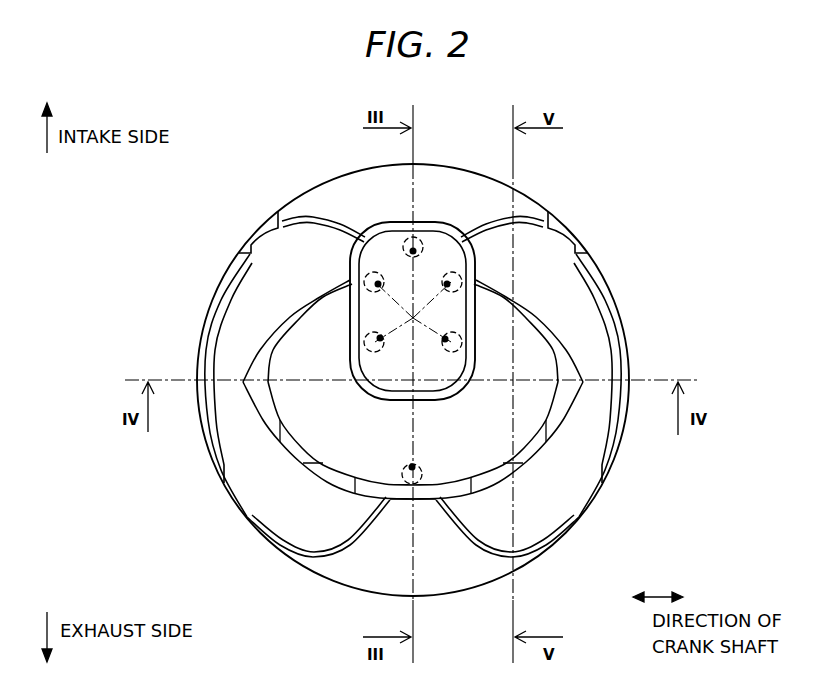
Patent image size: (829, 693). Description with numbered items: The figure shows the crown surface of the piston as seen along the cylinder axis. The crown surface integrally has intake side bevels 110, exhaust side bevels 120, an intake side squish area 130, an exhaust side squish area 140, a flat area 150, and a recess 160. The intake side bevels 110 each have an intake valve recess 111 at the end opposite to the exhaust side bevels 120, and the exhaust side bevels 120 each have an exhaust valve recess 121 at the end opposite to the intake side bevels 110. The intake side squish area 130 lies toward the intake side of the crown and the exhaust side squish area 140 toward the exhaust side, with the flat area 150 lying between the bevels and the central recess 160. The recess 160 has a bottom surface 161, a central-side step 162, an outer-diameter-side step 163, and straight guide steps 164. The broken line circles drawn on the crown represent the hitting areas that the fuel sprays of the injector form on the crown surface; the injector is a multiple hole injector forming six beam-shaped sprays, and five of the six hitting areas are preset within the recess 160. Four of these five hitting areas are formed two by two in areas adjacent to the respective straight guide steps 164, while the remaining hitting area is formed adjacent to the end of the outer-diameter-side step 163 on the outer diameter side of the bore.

The intake side bevel 110 is at (268, 294).
The intake valve recess 111 is at (297, 228).
The exhaust side bevel 120 is at (280, 490).
The exhaust valve recess 121 is at (310, 545).
The intake side squish area 130 is at (330, 204).
The exhaust side squish area 140 is at (352, 573).
The flat area 150 is at (483, 420).
The recess 160 is at (456, 311).
The bottom surface 161 is at (442, 320).
The central-side step 162 is at (443, 392).
The outer-diameter-side step 163 is at (384, 230).
The straight guide step 164 is at (472, 283).